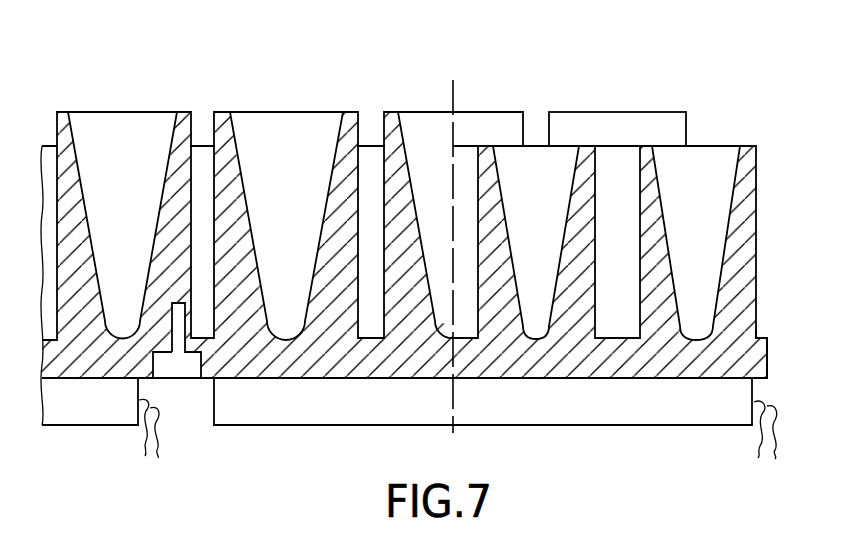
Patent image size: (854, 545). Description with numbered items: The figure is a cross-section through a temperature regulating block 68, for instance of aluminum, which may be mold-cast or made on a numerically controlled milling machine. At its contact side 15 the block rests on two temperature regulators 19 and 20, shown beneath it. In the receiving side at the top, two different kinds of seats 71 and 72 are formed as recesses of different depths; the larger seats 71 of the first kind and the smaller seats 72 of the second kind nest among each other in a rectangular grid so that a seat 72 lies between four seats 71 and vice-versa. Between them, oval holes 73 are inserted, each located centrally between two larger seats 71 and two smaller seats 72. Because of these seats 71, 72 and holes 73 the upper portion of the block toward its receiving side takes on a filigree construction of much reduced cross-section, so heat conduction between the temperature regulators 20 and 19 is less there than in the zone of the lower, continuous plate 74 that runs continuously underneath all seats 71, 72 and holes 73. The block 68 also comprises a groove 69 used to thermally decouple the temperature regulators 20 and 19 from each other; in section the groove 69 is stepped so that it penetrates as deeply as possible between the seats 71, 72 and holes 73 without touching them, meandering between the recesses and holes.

The contact side 15 is at (503, 380).
The temperature regulator 19 is at (84, 407).
The temperature regulator 20 is at (354, 409).
The temperature regulating block 68 is at (708, 116).
The groove 69 is at (186, 364).
The seats of the first kind 71 is at (83, 153).
The seats of the second kind 72 is at (573, 167).
The oval holes 73 is at (200, 172).
The continuous plate 74 is at (760, 354).